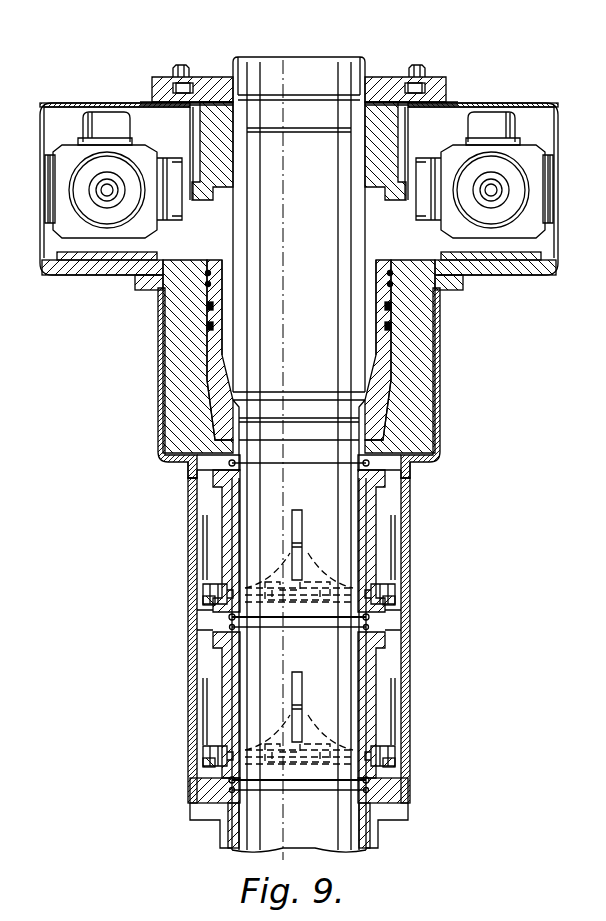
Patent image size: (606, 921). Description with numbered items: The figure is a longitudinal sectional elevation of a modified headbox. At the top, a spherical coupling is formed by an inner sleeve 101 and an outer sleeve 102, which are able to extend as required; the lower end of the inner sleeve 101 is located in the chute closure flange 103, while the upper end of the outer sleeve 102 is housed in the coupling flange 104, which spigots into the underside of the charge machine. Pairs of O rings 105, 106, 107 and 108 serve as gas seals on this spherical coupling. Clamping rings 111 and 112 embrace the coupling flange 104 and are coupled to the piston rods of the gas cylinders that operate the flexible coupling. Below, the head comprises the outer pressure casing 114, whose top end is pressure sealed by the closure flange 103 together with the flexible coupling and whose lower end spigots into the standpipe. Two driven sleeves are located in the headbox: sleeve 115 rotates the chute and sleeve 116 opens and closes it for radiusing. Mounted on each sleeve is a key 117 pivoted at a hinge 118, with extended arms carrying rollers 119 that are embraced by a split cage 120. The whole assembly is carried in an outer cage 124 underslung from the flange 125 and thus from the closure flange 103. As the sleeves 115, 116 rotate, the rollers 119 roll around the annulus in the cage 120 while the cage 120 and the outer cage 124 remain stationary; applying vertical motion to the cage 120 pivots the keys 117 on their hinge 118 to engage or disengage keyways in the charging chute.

The inner sleeve 101 is at (383, 368).
The outer sleeve 102 is at (380, 153).
The flange 103 is at (410, 408).
The coupling flange 104 is at (385, 105).
The O rings 105 is at (391, 328).
The O rings 106 is at (391, 306).
The O rings 107 is at (387, 99).
The O rings 108 is at (388, 284).
The clamping ring 111 is at (160, 92).
The clamping ring 112 is at (157, 76).
The outer pressure casing 114 is at (407, 623).
The driven sleeve 115 is at (363, 558).
The driven sleeve 116 is at (365, 718).
The key 117 is at (298, 520).
The hinge 118 is at (313, 580).
The rollers 119 is at (380, 595).
The split cage 120 is at (395, 523).
The outer cage 124 is at (405, 488).
The flange 125 is at (420, 450).